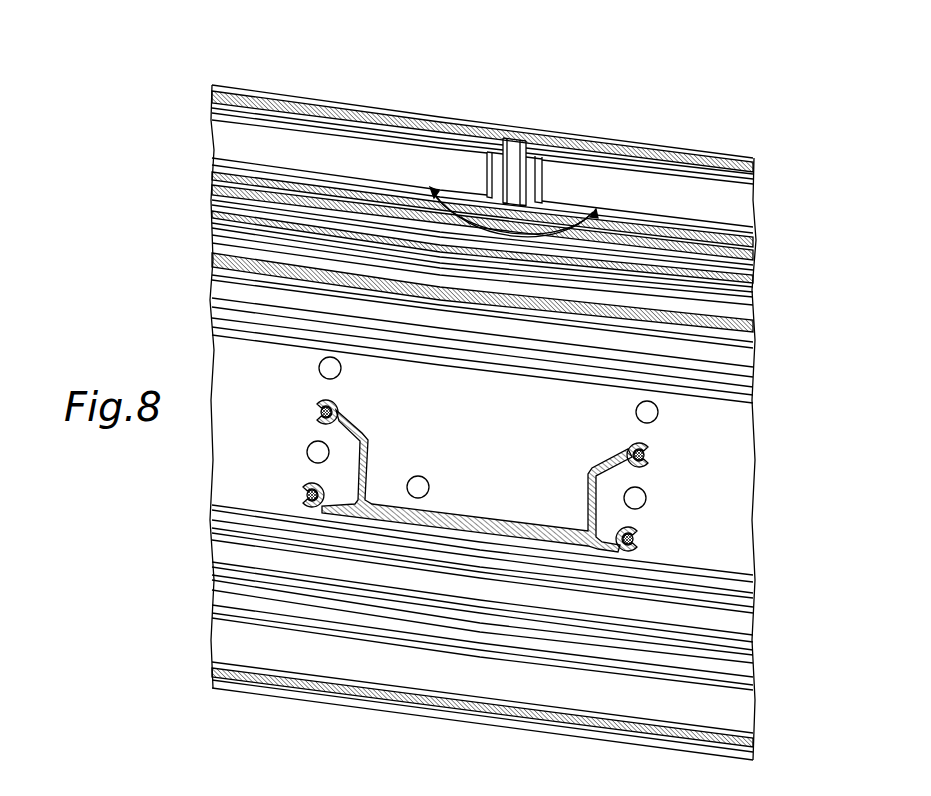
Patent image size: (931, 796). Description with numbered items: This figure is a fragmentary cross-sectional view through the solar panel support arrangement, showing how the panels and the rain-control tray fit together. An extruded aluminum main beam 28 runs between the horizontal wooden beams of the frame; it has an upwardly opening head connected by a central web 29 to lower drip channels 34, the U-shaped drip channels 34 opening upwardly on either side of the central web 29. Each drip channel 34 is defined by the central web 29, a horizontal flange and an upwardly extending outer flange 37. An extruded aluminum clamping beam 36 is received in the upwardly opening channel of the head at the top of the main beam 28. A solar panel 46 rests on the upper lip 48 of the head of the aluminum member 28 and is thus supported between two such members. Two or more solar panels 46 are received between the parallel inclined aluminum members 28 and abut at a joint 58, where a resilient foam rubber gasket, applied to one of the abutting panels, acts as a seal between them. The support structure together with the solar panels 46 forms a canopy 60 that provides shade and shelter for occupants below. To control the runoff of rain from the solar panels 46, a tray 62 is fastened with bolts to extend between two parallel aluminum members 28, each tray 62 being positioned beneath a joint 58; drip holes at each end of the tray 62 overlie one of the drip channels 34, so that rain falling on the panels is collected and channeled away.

The main beam 28 is at (212, 366).
The central web 29 is at (212, 450).
The drip channel 34 is at (212, 635).
The clamping beam 36 is at (318, 100).
The outer flange 37 is at (366, 669).
The solar panel 46 is at (210, 140).
The upper lip 48 is at (727, 243).
The joint 58 is at (523, 126).
The canopy 60 is at (410, 88).
The tray 62 is at (588, 498).